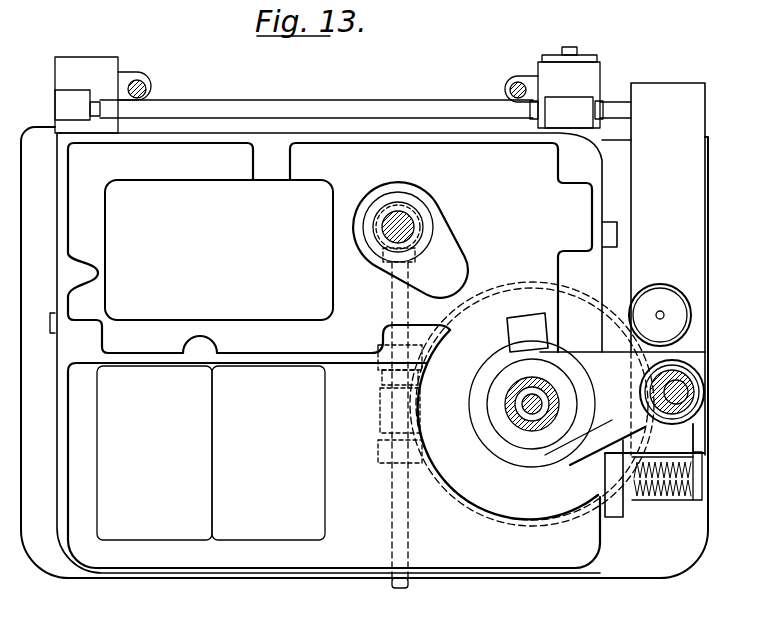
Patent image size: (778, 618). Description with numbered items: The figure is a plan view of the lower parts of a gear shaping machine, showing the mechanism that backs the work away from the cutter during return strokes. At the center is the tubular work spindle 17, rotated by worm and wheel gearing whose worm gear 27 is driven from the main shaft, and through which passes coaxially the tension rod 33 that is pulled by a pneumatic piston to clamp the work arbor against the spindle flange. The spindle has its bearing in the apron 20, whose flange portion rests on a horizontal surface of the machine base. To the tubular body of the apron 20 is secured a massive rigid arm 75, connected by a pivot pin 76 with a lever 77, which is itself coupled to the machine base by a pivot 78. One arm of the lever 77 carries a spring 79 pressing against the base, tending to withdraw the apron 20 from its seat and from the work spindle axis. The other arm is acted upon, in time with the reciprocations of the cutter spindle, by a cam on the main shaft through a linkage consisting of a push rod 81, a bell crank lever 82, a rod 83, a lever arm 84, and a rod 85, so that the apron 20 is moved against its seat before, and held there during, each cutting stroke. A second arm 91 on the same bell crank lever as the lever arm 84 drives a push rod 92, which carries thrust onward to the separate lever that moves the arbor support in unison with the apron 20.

The tubular work spindle 17 is at (507, 417).
The apron 20 is at (495, 441).
The worm gear 27 is at (458, 493).
The tension rod 33 is at (527, 405).
The rigid arm 75 is at (600, 456).
The pivot pin 76 is at (690, 398).
The lever 77 is at (683, 228).
The pivot 78 is at (670, 307).
The spring 79 is at (672, 500).
The push rod 81 is at (151, 88).
The bell crank lever 82 is at (143, 77).
The rod 83 is at (222, 110).
The lever arm 84 is at (569, 112).
The rod 85 is at (613, 108).
The second arm 91 is at (510, 78).
The push rod 92 is at (506, 86).